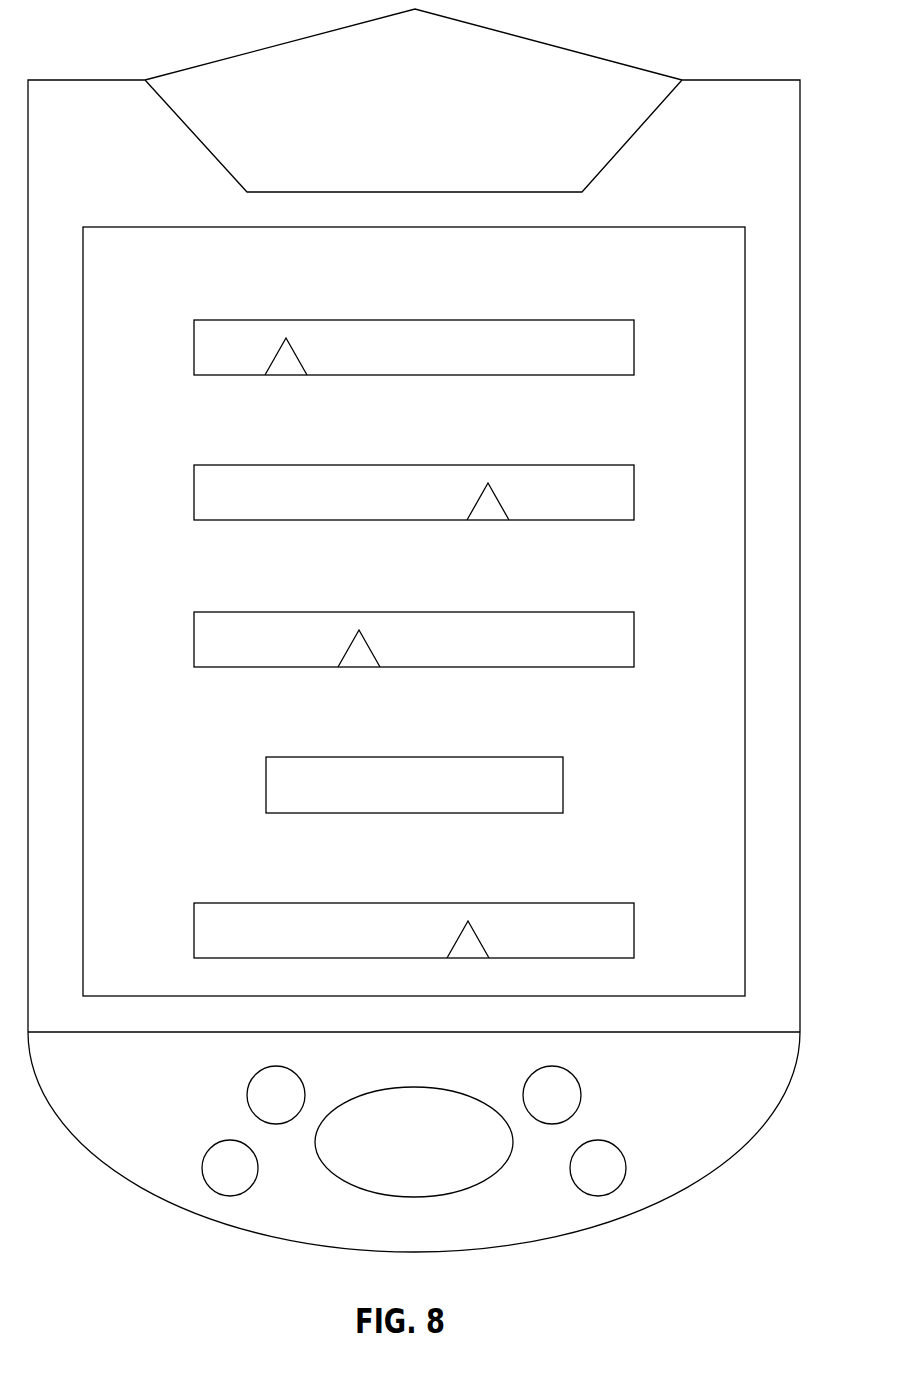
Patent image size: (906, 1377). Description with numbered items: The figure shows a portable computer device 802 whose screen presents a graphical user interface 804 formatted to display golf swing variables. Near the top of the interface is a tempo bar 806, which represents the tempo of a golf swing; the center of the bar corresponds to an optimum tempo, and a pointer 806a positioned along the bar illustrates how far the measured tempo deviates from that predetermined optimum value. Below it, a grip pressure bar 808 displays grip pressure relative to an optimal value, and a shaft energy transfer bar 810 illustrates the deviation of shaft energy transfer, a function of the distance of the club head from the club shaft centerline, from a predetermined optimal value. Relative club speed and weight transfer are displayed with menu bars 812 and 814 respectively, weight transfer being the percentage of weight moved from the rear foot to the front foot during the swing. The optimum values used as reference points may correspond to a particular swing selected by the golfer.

The portable computer device 802 is at (100, 80).
The graphical user interface 804 is at (157, 227).
The tempo bar 806 is at (268, 320).
The pointer 806a is at (285, 372).
The grip pressure bar 808 is at (268, 465).
The shaft energy transfer bar 810 is at (250, 612).
The menu bar 812 is at (320, 757).
The menu bar 814 is at (268, 903).